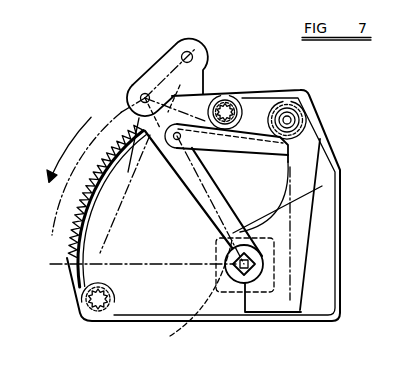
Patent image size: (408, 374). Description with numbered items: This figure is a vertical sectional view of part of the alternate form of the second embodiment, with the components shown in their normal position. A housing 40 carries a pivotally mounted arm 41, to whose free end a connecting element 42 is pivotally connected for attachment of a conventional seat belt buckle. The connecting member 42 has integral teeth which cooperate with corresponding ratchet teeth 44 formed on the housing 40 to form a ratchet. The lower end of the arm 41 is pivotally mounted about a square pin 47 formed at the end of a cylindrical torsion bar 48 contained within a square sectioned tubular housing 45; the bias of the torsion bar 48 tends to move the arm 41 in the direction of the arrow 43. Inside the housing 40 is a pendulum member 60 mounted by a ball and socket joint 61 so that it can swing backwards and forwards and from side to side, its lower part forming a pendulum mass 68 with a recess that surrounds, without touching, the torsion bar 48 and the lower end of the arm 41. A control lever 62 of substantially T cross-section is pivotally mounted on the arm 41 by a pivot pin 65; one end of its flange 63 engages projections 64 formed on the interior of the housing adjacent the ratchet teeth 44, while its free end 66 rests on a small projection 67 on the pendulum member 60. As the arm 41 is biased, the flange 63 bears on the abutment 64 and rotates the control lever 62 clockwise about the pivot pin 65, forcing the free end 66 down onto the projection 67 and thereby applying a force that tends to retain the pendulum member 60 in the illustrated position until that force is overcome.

The housing 40 is at (340, 210).
The pivotally mounted arm 41 is at (130, 112).
The connecting element 42 is at (178, 44).
The arrow 43 is at (62, 148).
The ratchet teeth 44 is at (67, 210).
The tubular housing 45 is at (176, 333).
The square pin 47 is at (243, 284).
The torsion bar 48 is at (234, 272).
The pendulum member 60 is at (310, 177).
The ball and socket joint 61 is at (298, 123).
The control lever 62 is at (223, 147).
The flange end 63 is at (214, 93).
The projections 64 is at (128, 194).
The pivot pin 65 is at (178, 149).
The free end 66 is at (268, 135).
The projection 67 is at (323, 137).
The pendulum mass 68 is at (297, 268).